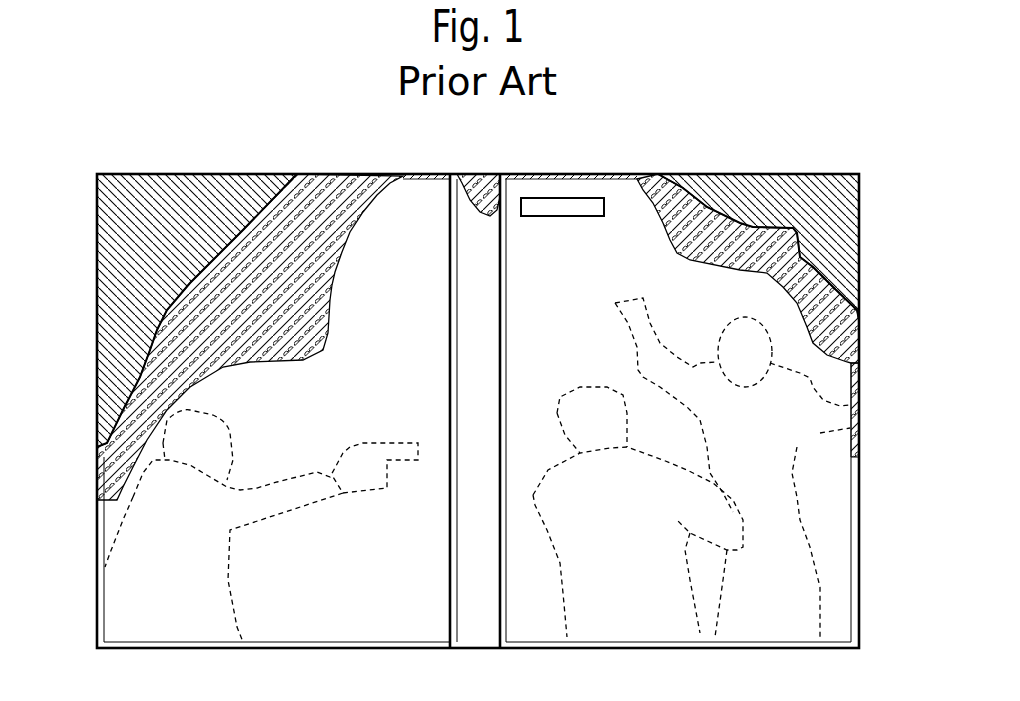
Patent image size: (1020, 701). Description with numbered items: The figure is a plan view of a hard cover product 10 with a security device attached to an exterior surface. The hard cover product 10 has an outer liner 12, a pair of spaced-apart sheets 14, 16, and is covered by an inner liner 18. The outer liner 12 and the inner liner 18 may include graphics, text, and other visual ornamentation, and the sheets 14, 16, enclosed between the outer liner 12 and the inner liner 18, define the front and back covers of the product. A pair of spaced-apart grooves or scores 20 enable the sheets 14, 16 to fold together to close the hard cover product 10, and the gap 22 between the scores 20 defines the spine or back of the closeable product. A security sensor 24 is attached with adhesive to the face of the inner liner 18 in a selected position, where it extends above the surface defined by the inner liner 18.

The hard cover product 10 is at (655, 175).
The outer liner 12 is at (178, 190).
The sheet 14 is at (827, 335).
The sheet 16 is at (123, 447).
The inner liner 18 is at (477, 470).
The scores 20 is at (465, 200).
The gap 22 is at (478, 411).
The security sensor 24 is at (547, 202).